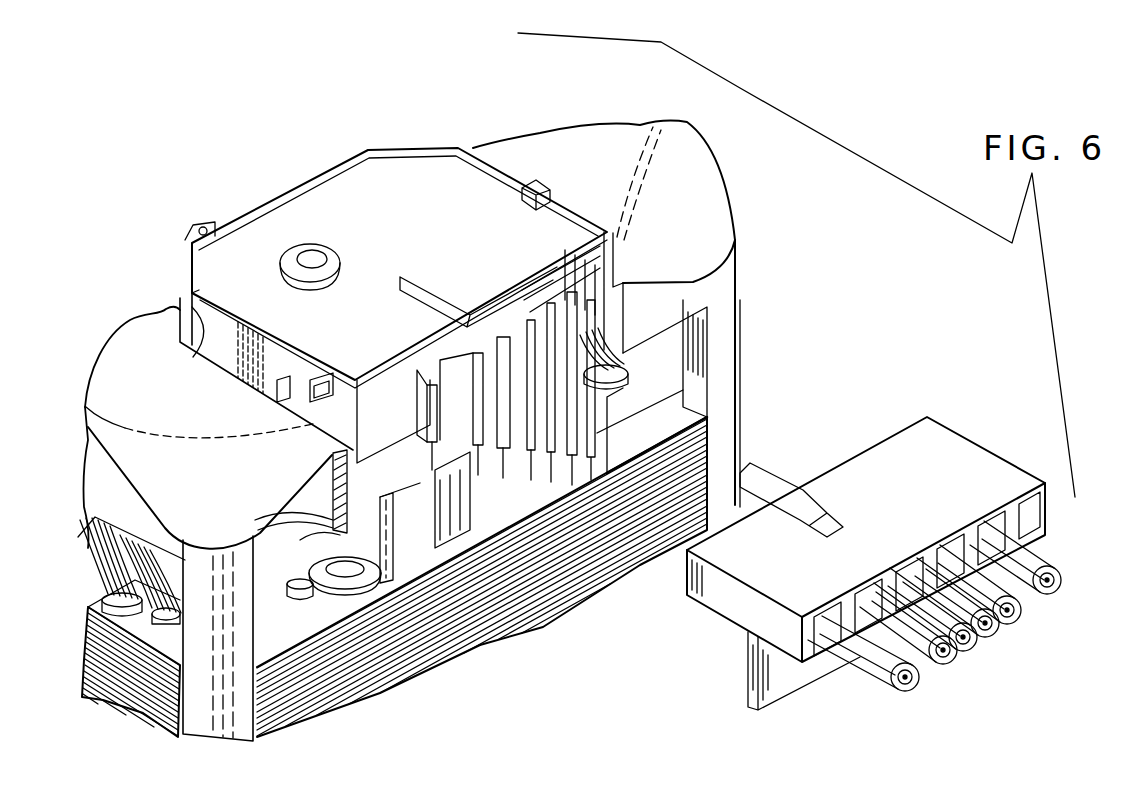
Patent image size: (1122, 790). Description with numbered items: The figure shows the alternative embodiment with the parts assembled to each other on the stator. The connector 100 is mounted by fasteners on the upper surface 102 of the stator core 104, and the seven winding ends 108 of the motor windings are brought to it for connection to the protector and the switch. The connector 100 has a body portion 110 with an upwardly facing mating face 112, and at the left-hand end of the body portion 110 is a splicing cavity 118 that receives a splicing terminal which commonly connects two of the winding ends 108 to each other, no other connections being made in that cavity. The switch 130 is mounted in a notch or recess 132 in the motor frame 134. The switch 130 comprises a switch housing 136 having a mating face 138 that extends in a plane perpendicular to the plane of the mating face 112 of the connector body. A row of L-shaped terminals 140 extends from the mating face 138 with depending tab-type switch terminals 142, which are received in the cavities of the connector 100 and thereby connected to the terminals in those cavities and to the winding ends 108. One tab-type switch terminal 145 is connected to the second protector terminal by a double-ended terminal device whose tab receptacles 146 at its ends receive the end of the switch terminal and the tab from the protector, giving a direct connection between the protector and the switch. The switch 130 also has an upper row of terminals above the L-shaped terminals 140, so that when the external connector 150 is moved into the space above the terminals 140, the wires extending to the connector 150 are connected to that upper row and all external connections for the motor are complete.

The connector 100 is at (484, 648).
The upper surface 102 is at (381, 693).
The stator core 104 is at (543, 627).
The winding ends 108 is at (300, 585).
The body portion 110 is at (597, 433).
The mating face 112 is at (606, 397).
The splicing cavity 118 is at (397, 556).
The switch 130 is at (443, 138).
The notch or recess 132 is at (192, 306).
The motor frame 134 is at (697, 176).
The switch housing 136 is at (243, 362).
The mating face 138 is at (372, 380).
The L-shaped terminals 140 is at (560, 296).
The tab-type switch terminals 142 is at (585, 345).
The tab-type switch terminal 145 is at (452, 385).
The tab receptacles 146 is at (337, 494).
The connector 150 is at (962, 443).